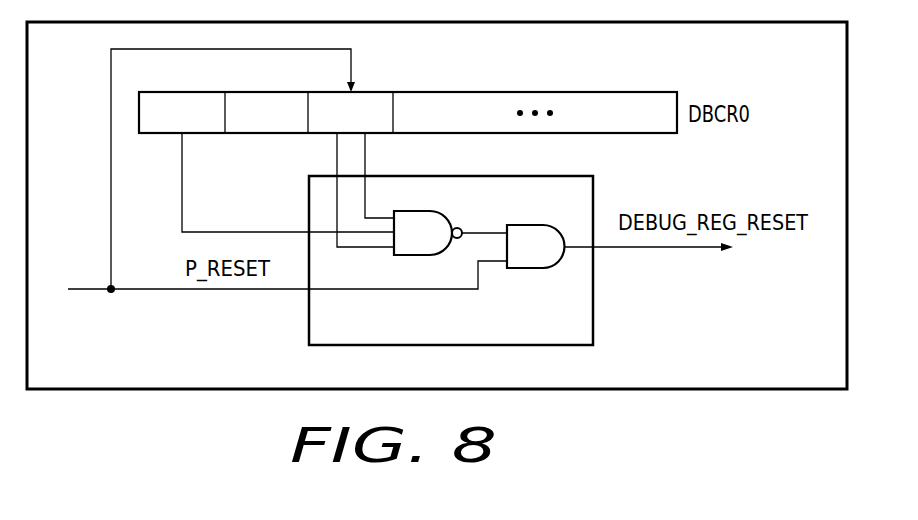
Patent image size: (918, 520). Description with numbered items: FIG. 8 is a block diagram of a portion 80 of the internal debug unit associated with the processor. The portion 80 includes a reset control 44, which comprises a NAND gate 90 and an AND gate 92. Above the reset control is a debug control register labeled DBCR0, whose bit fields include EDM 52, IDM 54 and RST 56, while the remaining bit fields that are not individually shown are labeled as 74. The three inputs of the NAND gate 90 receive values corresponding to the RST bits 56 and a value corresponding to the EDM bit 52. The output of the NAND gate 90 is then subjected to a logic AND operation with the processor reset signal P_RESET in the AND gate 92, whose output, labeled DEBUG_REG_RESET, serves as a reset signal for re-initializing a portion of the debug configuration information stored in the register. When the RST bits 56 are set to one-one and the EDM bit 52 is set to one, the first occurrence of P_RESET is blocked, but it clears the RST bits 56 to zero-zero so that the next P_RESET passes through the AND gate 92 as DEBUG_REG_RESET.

The EDM bit 52 is at (188, 92).
The IDM bit field 54 is at (271, 92).
The RST bits 56 is at (370, 92).
The bit fields not shown 74 is at (568, 92).
The NAND gate 90 is at (438, 211).
The AND gate 92 is at (538, 225).
The reset control 44 is at (577, 340).
The portion of internal debug unit 80 is at (830, 359).